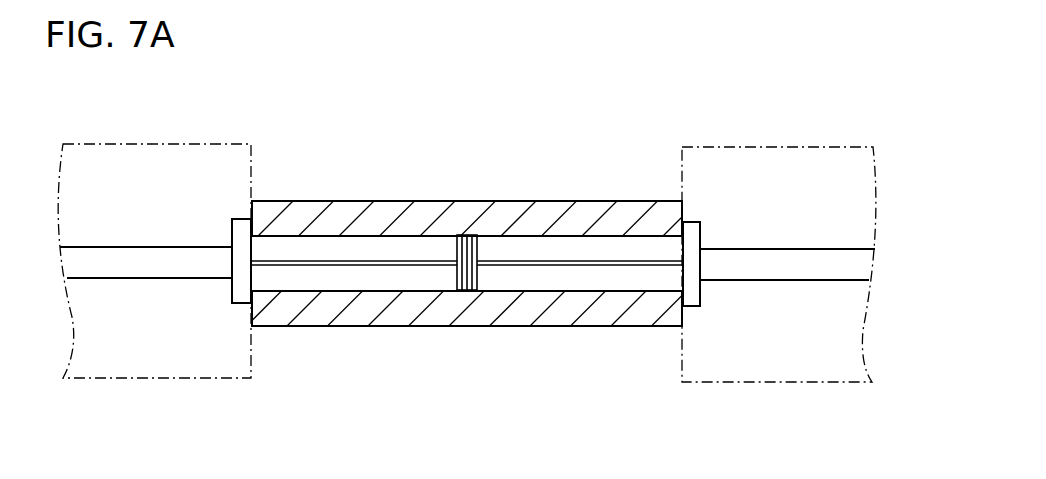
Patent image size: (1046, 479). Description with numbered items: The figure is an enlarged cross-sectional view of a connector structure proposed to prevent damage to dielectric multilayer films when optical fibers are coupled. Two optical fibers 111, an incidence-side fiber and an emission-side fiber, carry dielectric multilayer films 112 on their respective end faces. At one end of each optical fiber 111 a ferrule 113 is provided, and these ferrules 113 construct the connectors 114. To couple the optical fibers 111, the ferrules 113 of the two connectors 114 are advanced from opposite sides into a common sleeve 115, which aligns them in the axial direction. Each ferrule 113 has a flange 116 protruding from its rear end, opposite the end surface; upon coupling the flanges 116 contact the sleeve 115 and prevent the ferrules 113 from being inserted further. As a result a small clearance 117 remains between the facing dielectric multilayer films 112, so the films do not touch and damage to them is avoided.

The optical fiber 111 is at (340, 263).
The dielectric multilayer film 112 is at (458, 263).
The ferrule 113 is at (373, 277).
The connector 114 is at (618, 158).
The sleeve 115 is at (425, 202).
The flange 116 is at (238, 305).
The clearance 117 is at (460, 275).